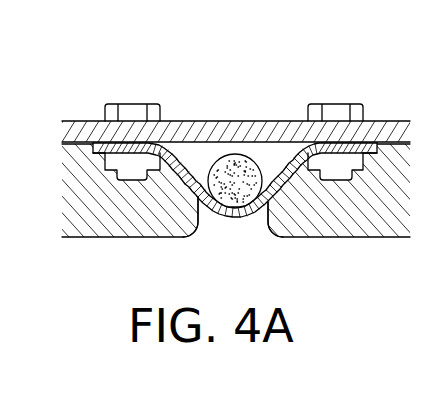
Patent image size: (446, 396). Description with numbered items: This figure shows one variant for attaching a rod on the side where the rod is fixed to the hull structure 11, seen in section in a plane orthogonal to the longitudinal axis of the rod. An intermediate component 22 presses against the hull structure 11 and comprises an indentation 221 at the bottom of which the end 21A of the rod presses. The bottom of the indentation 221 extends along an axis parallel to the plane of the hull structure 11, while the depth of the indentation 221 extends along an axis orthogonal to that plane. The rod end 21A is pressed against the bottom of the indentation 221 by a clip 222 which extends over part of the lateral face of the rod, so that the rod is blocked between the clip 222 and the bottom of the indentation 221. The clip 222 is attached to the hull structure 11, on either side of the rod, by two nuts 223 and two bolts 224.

The hull structure 11 is at (100, 130).
The intermediate component 22 is at (142, 213).
The indentation 221 is at (252, 222).
The clip 222 is at (292, 152).
The end of the rod 21A is at (239, 172).
The bolts 224 is at (132, 112).
The nuts 223 is at (150, 162).